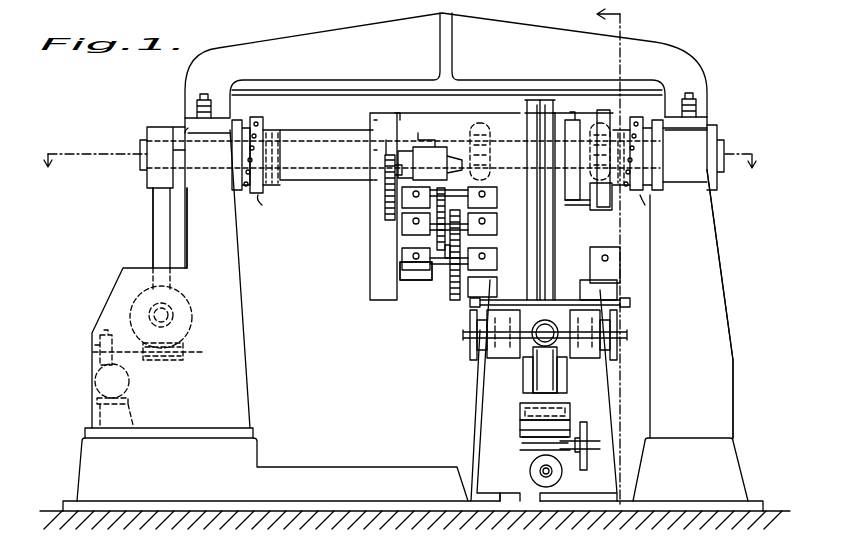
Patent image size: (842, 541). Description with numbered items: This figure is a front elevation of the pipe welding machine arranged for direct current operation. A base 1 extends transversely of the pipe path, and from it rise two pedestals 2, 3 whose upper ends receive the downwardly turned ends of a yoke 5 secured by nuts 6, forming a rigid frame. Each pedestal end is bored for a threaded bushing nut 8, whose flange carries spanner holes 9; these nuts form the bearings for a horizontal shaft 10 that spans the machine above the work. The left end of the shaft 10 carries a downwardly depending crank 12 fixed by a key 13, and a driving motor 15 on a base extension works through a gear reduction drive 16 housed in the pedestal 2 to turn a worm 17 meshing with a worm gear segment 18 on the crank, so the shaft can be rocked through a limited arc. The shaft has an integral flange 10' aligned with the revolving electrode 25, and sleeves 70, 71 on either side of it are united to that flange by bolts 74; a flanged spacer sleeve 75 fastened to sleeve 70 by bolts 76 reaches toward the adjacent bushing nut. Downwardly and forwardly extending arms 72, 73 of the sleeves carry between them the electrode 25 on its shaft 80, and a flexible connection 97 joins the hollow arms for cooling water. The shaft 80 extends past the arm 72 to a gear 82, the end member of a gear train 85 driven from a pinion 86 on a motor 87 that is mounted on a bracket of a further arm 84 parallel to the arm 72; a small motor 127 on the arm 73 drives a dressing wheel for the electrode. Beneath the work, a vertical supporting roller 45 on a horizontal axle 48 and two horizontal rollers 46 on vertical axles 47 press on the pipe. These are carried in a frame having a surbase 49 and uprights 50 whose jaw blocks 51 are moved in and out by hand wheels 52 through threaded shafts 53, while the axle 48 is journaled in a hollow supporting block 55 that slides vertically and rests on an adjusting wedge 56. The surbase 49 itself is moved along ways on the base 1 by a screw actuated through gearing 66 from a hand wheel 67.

The base 1 is at (413, 474).
The pedestal 2 is at (247, 306).
The pedestal 3 is at (732, 309).
The yoke 5 is at (395, 21).
The nuts 6 is at (198, 100).
The bushing nut 8 is at (453, 209).
The spanner holes 9 is at (262, 124).
The shaft 10 is at (710, 154).
The flange 10' is at (550, 179).
The crank 12 is at (155, 228).
The key 13 is at (147, 140).
The driving motor 15 is at (96, 397).
The gear reduction drive 16 is at (105, 325).
The worm 17 is at (176, 320).
The worm gear segment 18 is at (170, 305).
The electrode 25 is at (582, 210).
The vertical supporting roller 45 is at (556, 378).
The horizontal rollers 46 is at (535, 340).
The vertical axles 47 is at (470, 328).
The horizontal axle 48 is at (524, 388).
The surbase 49 is at (528, 465).
The uprights 50 is at (476, 414).
The jaw blocks 51 is at (480, 352).
The hand wheels 52 is at (474, 345).
The threaded shafts 53 is at (488, 340).
The hollow supporting block 55 is at (522, 405).
The adjusting wedge 56 is at (571, 412).
The gearing 66 is at (562, 472).
The hand wheel 67 is at (590, 458).
The sleeve 70 is at (480, 138).
The sleeve 71 is at (596, 138).
The arm 72 is at (455, 300).
The arm 73 is at (618, 290).
The bolts 74 is at (527, 103).
The flanged spacer sleeve 75 is at (345, 182).
The bolts 76 is at (372, 120).
The shaft 80 is at (622, 268).
The gear 82 is at (447, 298).
The arm 84 is at (400, 275).
The gear train 85 is at (437, 228).
The pinion 86 is at (391, 138).
The motor 87 is at (425, 160).
The connection 97 is at (603, 240).
The small motor 127 is at (615, 202).